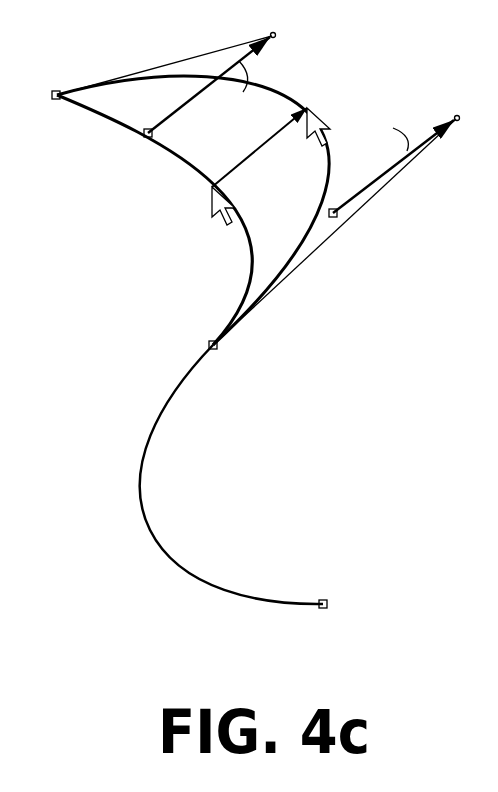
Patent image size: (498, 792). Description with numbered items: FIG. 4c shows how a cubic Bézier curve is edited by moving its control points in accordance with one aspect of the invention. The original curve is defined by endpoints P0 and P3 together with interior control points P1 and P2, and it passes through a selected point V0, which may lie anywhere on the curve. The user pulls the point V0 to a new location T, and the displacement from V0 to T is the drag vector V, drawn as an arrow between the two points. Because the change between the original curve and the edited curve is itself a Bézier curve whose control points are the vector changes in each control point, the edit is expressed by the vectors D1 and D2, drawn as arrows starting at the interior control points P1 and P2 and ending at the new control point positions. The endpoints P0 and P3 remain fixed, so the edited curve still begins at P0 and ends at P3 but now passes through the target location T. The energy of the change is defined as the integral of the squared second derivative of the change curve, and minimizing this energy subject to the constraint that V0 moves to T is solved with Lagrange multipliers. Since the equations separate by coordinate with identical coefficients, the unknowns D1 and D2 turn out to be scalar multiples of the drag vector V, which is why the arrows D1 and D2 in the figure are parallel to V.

The endpoint P0 is at (43, 83).
The interior control point P1 is at (133, 151).
The interior control point P2 is at (348, 239).
The endpoint P3 is at (233, 363).
The vector change in control point D1 is at (212, 83).
The vector change in control point D2 is at (396, 165).
The selected point on curve V0 is at (212, 187).
The drag vector V is at (233, 178).
The new location of dragged point T is at (311, 105).